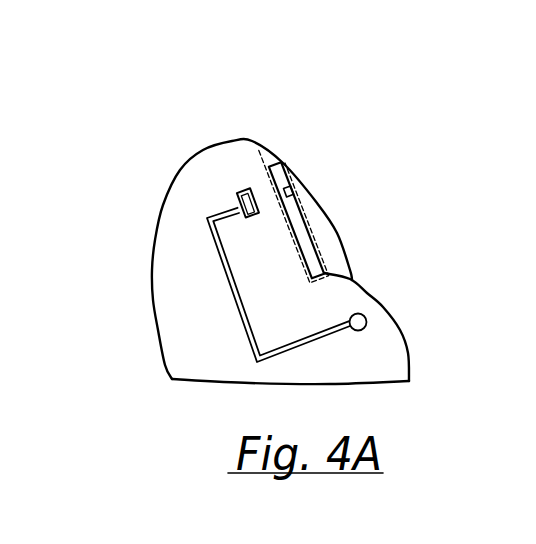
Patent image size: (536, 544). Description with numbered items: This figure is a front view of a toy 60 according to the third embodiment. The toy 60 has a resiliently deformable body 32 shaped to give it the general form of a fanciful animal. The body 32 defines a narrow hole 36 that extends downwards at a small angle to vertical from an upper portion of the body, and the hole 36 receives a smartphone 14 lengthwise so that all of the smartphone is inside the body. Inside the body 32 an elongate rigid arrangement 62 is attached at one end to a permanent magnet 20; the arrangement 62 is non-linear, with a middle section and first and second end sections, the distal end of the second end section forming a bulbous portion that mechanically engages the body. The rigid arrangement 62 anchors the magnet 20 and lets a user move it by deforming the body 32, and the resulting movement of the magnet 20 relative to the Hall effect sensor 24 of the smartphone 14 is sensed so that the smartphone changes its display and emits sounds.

The toy 60 is at (254, 111).
The narrow hole 36 is at (272, 148).
The permanent magnet 20 is at (237, 200).
The Hall effect sensor 24 is at (292, 191).
The smartphone 14 is at (302, 227).
The resiliently deformable body 32 is at (177, 322).
The elongate rigid arrangement 62 is at (234, 329).